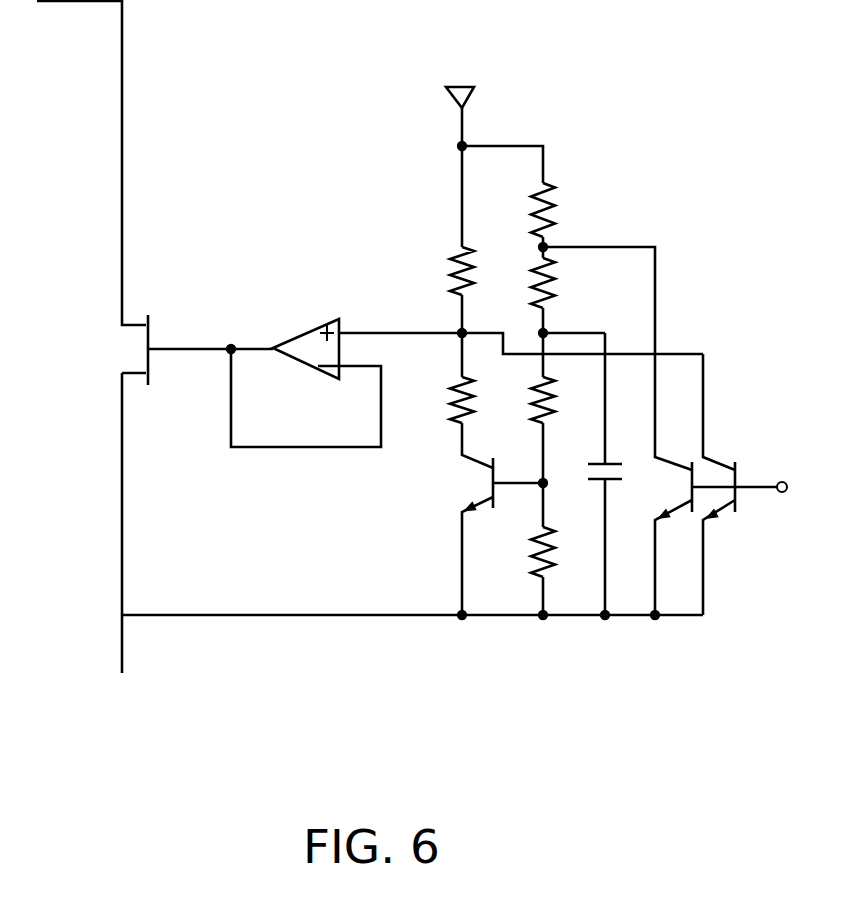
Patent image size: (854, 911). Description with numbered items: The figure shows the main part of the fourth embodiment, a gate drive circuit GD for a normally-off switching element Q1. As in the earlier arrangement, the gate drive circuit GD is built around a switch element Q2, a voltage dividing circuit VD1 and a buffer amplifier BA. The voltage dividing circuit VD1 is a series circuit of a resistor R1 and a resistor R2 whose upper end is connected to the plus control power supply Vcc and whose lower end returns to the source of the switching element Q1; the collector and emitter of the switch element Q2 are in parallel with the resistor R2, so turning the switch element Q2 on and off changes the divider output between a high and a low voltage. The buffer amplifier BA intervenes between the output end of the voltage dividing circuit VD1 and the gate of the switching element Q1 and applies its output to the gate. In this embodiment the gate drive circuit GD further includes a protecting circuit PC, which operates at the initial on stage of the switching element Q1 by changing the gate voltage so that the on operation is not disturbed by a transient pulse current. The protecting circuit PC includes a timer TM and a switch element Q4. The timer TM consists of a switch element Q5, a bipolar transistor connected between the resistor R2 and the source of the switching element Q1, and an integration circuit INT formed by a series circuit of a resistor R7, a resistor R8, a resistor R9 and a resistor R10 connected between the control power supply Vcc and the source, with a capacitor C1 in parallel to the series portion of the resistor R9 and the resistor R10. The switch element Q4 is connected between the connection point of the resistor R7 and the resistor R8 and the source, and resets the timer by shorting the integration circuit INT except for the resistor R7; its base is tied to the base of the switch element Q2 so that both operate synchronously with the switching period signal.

The switching element Q1 is at (135, 348).
The buffer amplifier BA is at (288, 362).
The gate drive circuit GD is at (349, 78).
The control power supply Vcc is at (462, 86).
The voltage dividing circuit VD1 is at (437, 250).
The resistor R1 is at (456, 278).
The resistor R7 is at (538, 209).
The resistor R8 is at (540, 287).
The integration circuit INT is at (573, 300).
The resistor R2 is at (453, 404).
The timer TM is at (520, 405).
The resistor R9 is at (549, 395).
The capacitor C1 is at (599, 466).
The switch element Q5 is at (485, 483).
The switch element Q4 is at (686, 483).
The switch element Q2 is at (715, 468).
The resistor R10 is at (537, 557).
The protecting circuit PC is at (505, 592).